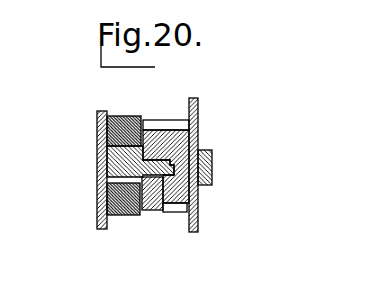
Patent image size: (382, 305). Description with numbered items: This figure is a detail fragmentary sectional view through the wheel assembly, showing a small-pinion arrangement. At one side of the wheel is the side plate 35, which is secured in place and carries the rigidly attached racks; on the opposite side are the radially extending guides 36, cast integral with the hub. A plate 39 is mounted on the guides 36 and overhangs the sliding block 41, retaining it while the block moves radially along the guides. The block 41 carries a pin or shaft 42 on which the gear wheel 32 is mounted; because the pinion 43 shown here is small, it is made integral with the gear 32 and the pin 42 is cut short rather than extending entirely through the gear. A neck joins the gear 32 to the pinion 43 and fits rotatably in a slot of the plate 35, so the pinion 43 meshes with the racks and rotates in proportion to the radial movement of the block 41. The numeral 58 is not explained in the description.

The gear wheel 32 is at (160, 128).
The side plate 35 is at (199, 122).
The radially extending guide 36 is at (117, 115).
The plate 39 is at (97, 118).
The sliding block 41 is at (95, 195).
The pin or shaft 42 is at (165, 176).
The pinion 43 is at (212, 168).
The body 58 is at (185, 166).